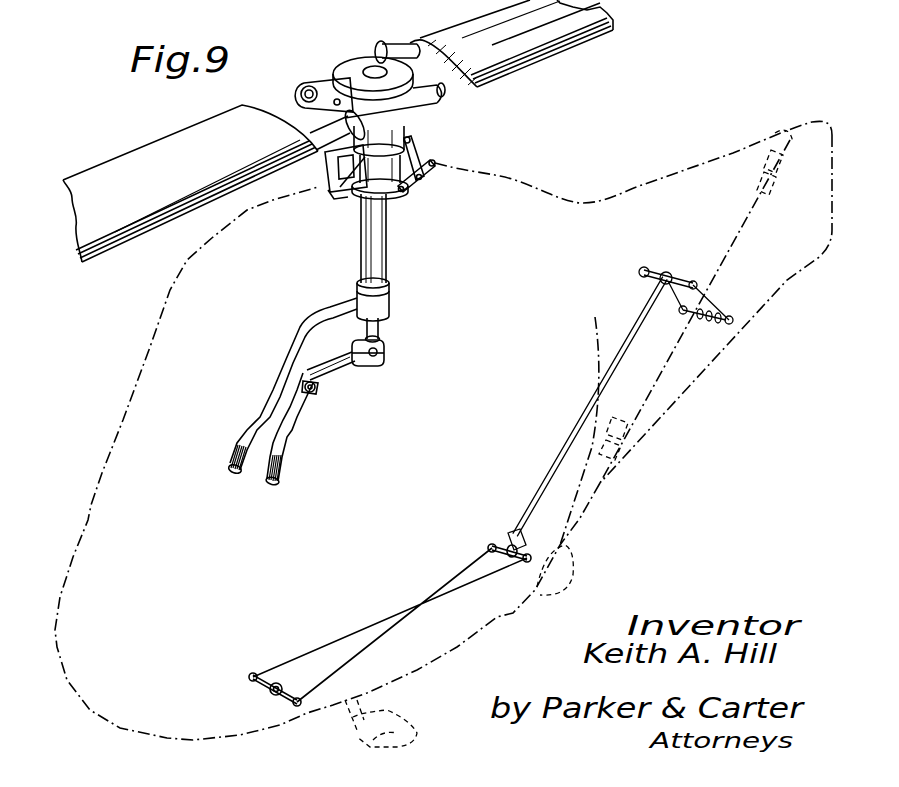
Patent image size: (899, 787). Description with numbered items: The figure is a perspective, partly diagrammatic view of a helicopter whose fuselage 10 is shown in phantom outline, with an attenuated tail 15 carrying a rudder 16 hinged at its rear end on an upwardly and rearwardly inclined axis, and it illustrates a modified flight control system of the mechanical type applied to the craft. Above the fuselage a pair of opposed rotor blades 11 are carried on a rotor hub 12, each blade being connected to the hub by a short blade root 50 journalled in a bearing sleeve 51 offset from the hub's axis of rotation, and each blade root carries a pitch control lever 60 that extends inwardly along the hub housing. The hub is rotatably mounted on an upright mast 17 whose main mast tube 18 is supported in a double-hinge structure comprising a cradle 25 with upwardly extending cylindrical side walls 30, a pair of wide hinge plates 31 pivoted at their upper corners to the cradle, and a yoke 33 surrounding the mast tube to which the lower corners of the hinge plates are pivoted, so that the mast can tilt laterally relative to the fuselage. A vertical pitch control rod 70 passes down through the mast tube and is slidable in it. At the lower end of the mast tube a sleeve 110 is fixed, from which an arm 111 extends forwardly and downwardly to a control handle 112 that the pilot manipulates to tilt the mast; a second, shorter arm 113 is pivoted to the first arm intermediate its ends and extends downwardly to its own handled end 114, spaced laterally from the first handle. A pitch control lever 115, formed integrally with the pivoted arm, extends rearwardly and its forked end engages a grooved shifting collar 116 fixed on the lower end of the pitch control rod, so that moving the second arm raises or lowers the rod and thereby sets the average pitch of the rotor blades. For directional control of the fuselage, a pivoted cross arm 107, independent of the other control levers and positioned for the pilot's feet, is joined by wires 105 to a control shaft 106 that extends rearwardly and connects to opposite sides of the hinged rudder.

The fuselage 10 is at (82, 505).
The rotor blade 11 is at (109, 243).
The rotor hub 12 is at (353, 67).
The tail 15 is at (657, 181).
The rudder 16 is at (775, 298).
The mast 17 is at (396, 223).
The mast tube 18 is at (378, 242).
The cradle 25 is at (413, 153).
The cylindrical side walls 30 is at (368, 177).
The hinge plate 31 is at (322, 173).
The yoke 33 is at (357, 188).
The blade root 50 is at (408, 44).
The bearing sleeve 51 is at (422, 108).
The pitch control lever 60 is at (324, 92).
The pitch control rod 70 is at (382, 328).
The wire 105 is at (475, 562).
The control shaft 106 is at (578, 428).
The pivoted cross arm 107 is at (260, 686).
The sleeve 110 is at (392, 296).
The arm 111 is at (300, 333).
The control handle 112 is at (227, 455).
The second arm 113 is at (291, 408).
The handled end 114 is at (283, 477).
The pitch control lever 115 is at (341, 377).
The shifting collar 116 is at (385, 362).